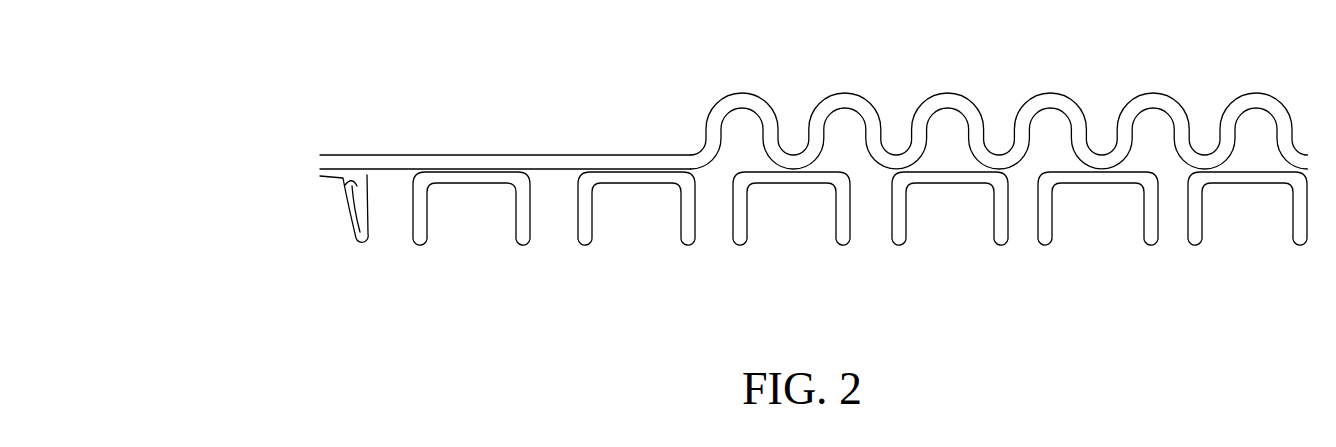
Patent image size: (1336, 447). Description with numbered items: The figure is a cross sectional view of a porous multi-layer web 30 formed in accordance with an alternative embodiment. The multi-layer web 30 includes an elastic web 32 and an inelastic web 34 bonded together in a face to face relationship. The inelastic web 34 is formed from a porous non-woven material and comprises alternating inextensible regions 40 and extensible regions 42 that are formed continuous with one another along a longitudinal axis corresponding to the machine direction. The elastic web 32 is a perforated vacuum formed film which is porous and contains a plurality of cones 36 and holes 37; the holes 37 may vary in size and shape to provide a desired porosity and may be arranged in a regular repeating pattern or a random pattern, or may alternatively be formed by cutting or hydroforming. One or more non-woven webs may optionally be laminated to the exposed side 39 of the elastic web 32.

The multi-layer web 30 is at (251, 59).
The elastic web 32 is at (341, 185).
The inelastic web 34 is at (342, 160).
The cones 36 is at (1059, 267).
The holes 37 is at (721, 246).
The exposed side 39 is at (898, 247).
The inextensible regions 40 is at (690, 143).
The extensible regions 42 is at (1293, 82).